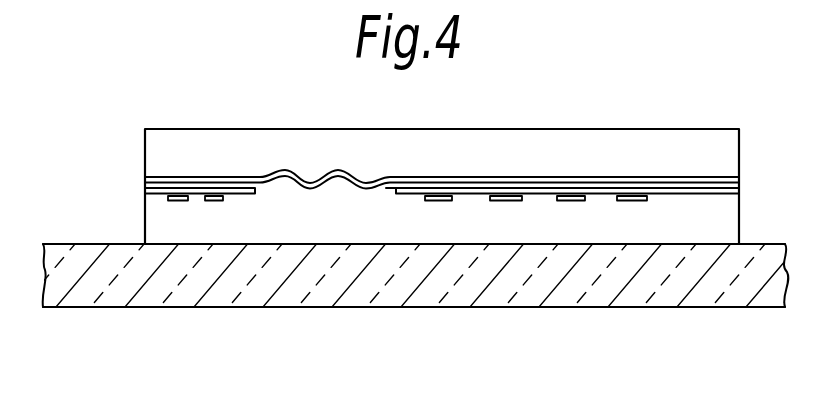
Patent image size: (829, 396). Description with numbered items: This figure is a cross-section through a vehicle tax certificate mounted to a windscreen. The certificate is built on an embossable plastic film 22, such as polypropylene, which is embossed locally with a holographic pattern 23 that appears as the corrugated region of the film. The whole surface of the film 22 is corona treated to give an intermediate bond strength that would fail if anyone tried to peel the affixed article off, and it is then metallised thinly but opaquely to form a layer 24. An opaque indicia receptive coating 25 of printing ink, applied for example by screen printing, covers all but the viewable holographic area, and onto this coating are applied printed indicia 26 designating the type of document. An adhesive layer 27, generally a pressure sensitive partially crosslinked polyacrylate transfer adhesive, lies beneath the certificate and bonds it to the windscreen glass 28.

The embossable plastic film 22 is at (498, 157).
The holographic pattern 23 is at (284, 172).
The metallised layer 24 is at (198, 182).
The opaque indicia receptive coating 25 is at (677, 190).
The printed indicia 26 is at (209, 200).
The adhesive layer 27 is at (317, 215).
The windscreen glass 28 is at (420, 288).